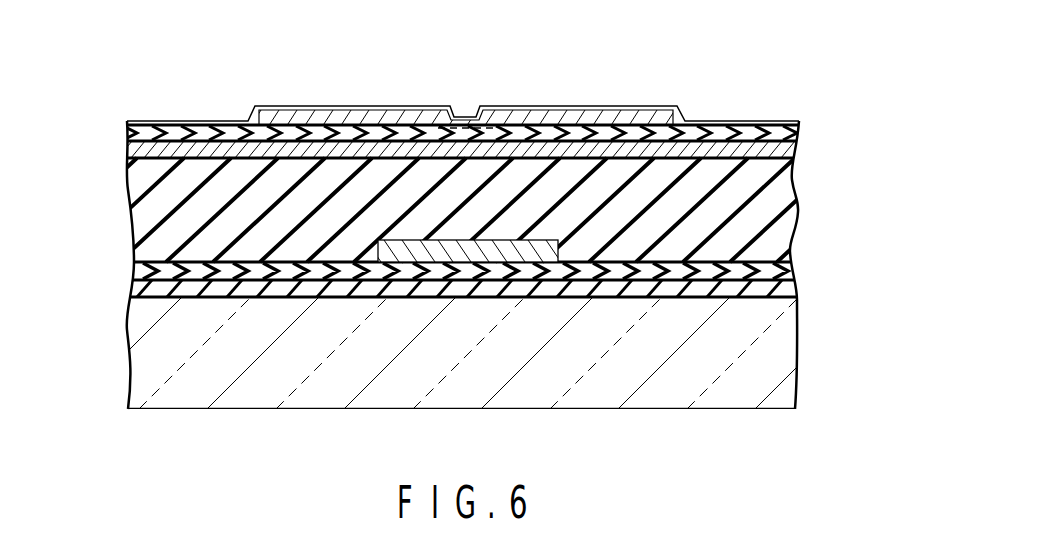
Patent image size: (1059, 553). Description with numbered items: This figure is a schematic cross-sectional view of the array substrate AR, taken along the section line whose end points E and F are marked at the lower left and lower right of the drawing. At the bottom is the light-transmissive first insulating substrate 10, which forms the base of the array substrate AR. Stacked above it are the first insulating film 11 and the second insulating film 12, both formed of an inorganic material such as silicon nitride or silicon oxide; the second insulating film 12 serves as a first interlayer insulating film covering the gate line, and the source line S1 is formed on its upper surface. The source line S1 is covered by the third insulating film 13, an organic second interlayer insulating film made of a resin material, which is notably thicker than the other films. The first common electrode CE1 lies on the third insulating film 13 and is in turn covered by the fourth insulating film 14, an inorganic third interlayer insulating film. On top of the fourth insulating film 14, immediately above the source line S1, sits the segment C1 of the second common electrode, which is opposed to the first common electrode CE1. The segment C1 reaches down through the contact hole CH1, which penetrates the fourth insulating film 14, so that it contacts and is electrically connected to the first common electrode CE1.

The first insulating substrate 10 is at (141, 355).
The first insulating film 11 is at (141, 288).
The second insulating film 12 is at (141, 269).
The third insulating film 13 is at (146, 191).
The fourth insulating film 14 is at (127, 124).
The source line S1 is at (497, 252).
The first common electrode CE1 is at (775, 147).
The segment C1 is at (638, 120).
The contact hole CH1 is at (465, 117).
The array substrate AR is at (803, 121).
The line E-F end point E is at (124, 427).
The line E-F end point F is at (794, 429).